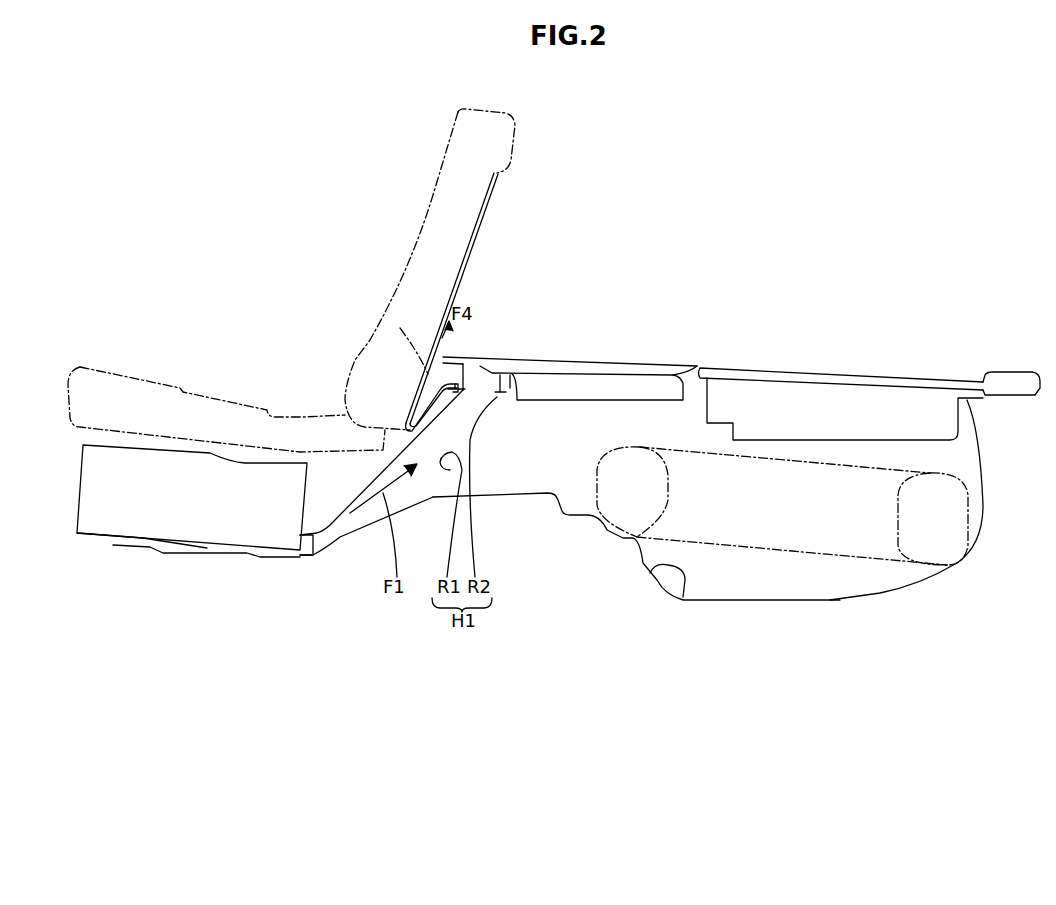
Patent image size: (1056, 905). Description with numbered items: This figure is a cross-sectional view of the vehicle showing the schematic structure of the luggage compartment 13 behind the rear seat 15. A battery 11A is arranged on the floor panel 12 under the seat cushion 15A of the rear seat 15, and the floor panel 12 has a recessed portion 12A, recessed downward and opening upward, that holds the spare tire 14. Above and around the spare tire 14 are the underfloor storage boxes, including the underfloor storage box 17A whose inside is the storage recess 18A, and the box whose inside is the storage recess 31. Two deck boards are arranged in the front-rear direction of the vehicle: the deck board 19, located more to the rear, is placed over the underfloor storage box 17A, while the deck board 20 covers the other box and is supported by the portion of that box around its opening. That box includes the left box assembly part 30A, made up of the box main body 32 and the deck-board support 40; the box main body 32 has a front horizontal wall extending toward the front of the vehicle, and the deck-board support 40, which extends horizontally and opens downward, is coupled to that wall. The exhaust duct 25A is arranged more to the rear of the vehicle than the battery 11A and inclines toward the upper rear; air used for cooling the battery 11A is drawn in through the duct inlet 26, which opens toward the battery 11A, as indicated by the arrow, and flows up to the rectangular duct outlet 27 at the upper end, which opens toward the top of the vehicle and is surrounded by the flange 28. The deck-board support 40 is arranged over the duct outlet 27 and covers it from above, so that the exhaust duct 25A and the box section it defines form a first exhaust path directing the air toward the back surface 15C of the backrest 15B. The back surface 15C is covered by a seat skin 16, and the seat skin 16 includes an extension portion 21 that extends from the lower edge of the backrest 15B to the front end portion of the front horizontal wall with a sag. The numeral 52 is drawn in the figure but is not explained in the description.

The battery 11A is at (170, 533).
The floor panel 12 is at (543, 494).
The recessed portion 12A is at (685, 597).
The luggage compartment 13 is at (568, 198).
The spare tire 14 is at (764, 570).
The rear seat 15 is at (445, 118).
The seat cushion 15A is at (118, 380).
The backrest 15B is at (455, 162).
The back surface 15C is at (430, 380).
The seat skin 16 is at (463, 250).
The underfloor storage box 17A is at (877, 440).
The storage recess 18A is at (957, 420).
The deck board 19 is at (830, 372).
The deck board 20 is at (642, 372).
The extension portion 21 is at (423, 413).
The exhaust duct 25A is at (417, 503).
The duct inlet 26 is at (309, 537).
The duct outlet 27 is at (474, 388).
The flange 28 is at (497, 397).
The left box assembly part 30A is at (610, 284).
The storage recess 31 is at (683, 397).
The box main body 32 is at (580, 400).
The deck-board support 40 is at (510, 357).
The reinforcement member 52 is at (430, 357).